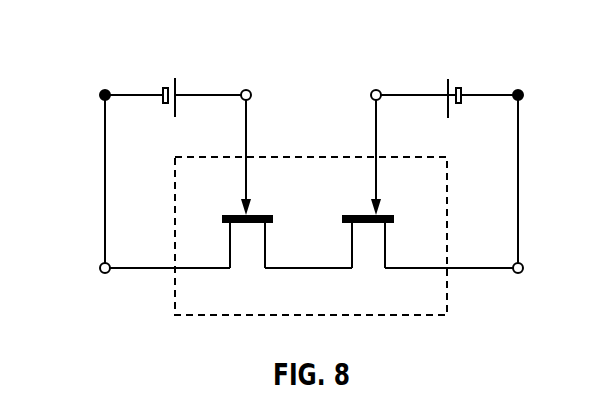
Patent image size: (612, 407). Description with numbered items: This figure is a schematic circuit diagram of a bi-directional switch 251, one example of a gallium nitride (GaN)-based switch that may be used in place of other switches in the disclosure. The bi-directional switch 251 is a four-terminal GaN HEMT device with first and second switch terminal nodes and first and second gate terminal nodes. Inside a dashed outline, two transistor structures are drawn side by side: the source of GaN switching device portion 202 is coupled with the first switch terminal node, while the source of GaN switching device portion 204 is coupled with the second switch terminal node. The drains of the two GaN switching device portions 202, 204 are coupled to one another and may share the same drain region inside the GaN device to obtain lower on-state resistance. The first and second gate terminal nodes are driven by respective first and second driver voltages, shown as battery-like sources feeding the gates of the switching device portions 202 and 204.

The bi-directional switch 251 is at (130, 45).
The GaN switching device portion 202 is at (227, 243).
The GaN switching device portion 204 is at (385, 243).